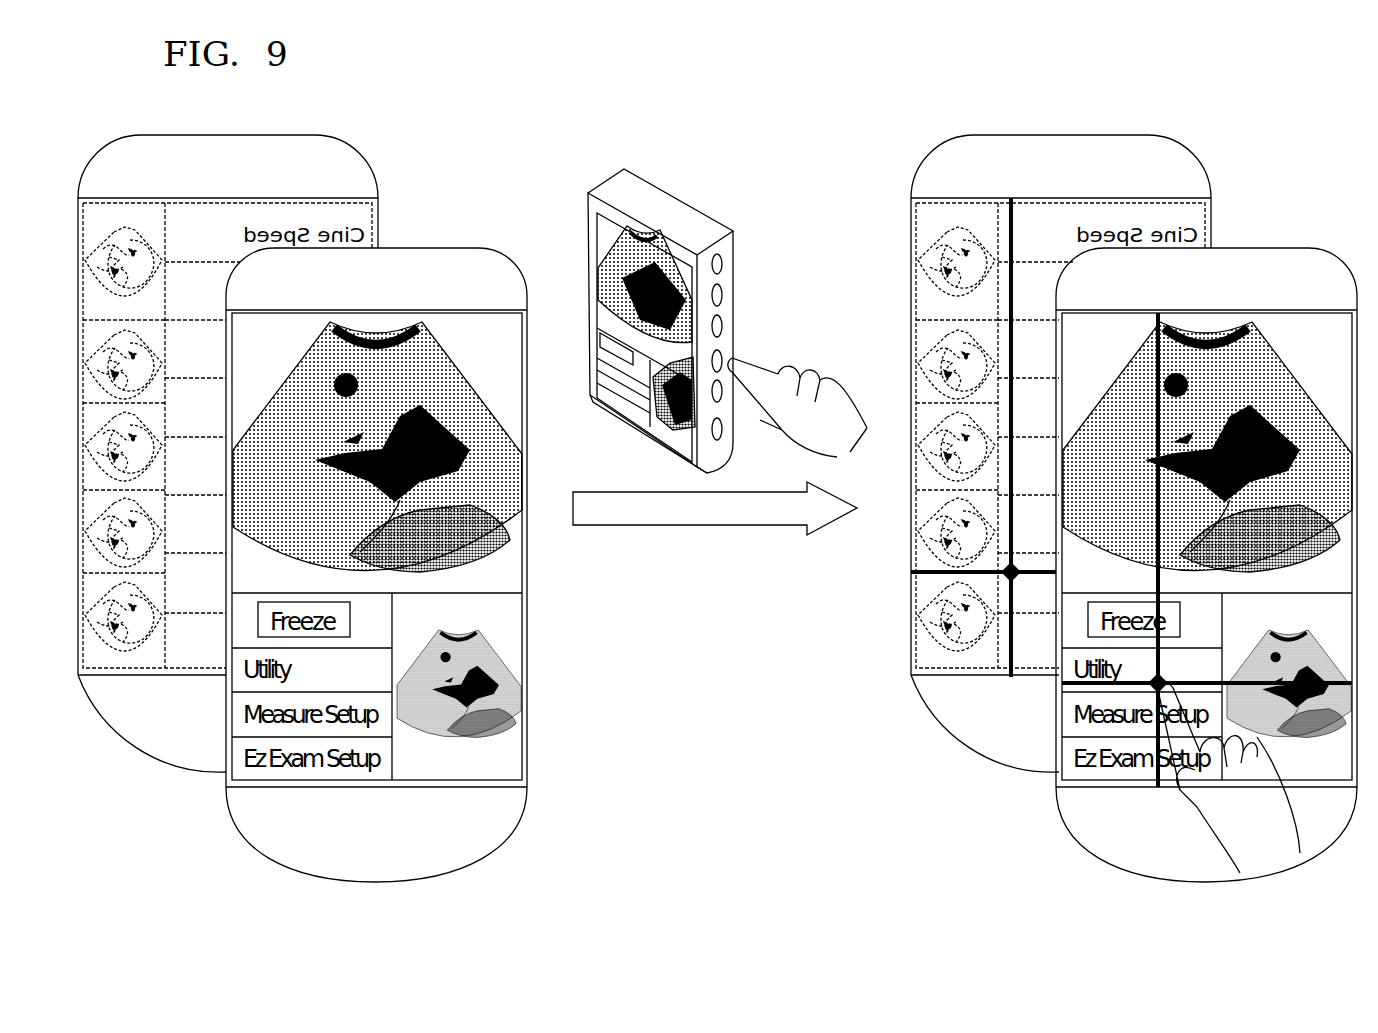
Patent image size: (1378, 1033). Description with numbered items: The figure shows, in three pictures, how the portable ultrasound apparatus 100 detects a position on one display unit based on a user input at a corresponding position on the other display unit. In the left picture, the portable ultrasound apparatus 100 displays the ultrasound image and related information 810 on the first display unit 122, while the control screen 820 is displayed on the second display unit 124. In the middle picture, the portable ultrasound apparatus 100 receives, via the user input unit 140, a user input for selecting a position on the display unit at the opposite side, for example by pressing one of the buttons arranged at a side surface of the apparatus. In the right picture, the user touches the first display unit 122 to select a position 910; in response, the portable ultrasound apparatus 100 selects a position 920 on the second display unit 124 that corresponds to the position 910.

The portable ultrasound apparatus 100 is at (680, 203).
The first display unit 122 is at (527, 350).
The second display unit 124 is at (374, 211).
The user input unit 140 is at (724, 352).
The ultrasound image and related information 810 is at (483, 638).
The control screen 820 is at (110, 655).
The position 910 is at (1153, 690).
The position 920 is at (1008, 576).